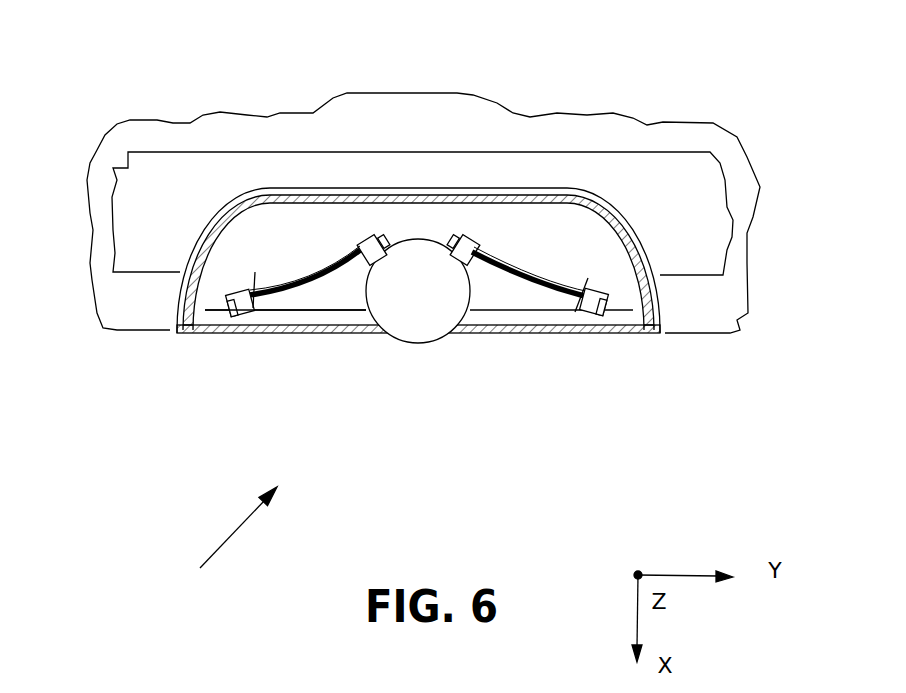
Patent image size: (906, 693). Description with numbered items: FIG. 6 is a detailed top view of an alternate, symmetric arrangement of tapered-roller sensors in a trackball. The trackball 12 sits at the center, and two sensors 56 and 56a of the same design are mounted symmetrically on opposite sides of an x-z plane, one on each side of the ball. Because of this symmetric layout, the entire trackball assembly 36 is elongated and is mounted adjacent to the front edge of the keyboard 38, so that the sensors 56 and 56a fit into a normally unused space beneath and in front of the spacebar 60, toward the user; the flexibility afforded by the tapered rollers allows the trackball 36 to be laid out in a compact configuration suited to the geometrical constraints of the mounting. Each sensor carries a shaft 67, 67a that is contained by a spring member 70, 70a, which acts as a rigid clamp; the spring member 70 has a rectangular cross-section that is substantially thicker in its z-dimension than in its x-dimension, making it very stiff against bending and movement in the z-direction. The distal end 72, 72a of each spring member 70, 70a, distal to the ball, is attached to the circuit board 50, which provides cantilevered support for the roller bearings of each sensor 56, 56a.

The cylindrical member 12 is at (422, 312).
The trackball assembly 36 is at (223, 545).
The keyboard 38 is at (613, 333).
The circuit board 50 is at (293, 306).
The sensor 56 is at (335, 292).
The sensor 56a is at (502, 299).
The spacebar 60 is at (685, 227).
The shaft 67 is at (310, 283).
The leaf spring 67a is at (534, 272).
The spring member 70 is at (311, 288).
The pin 70a is at (522, 282).
The distal end 72 is at (240, 290).
The pad 72a is at (593, 293).